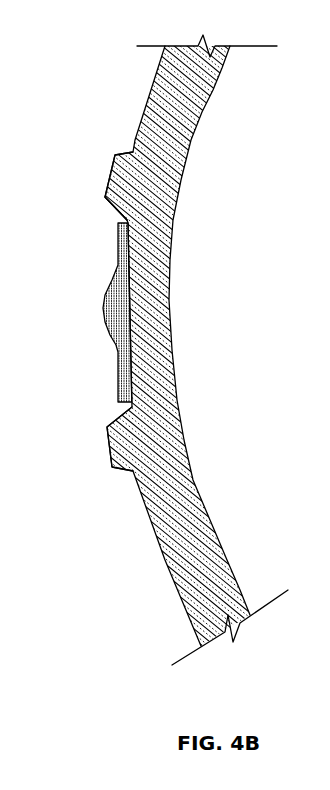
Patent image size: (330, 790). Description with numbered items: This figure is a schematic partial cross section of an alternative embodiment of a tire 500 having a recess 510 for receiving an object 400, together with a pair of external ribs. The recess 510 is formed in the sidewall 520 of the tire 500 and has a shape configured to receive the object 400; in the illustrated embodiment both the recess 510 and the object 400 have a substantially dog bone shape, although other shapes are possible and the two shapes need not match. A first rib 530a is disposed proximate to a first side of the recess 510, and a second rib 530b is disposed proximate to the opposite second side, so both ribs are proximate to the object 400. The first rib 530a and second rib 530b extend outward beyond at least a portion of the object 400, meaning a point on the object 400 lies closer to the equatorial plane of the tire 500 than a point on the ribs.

The tire 500 is at (84, 46).
The sidewall 520 is at (145, 110).
The first rib 530a is at (108, 176).
The recess 510 is at (122, 216).
The object 400 is at (110, 314).
The second rib 530b is at (108, 446).